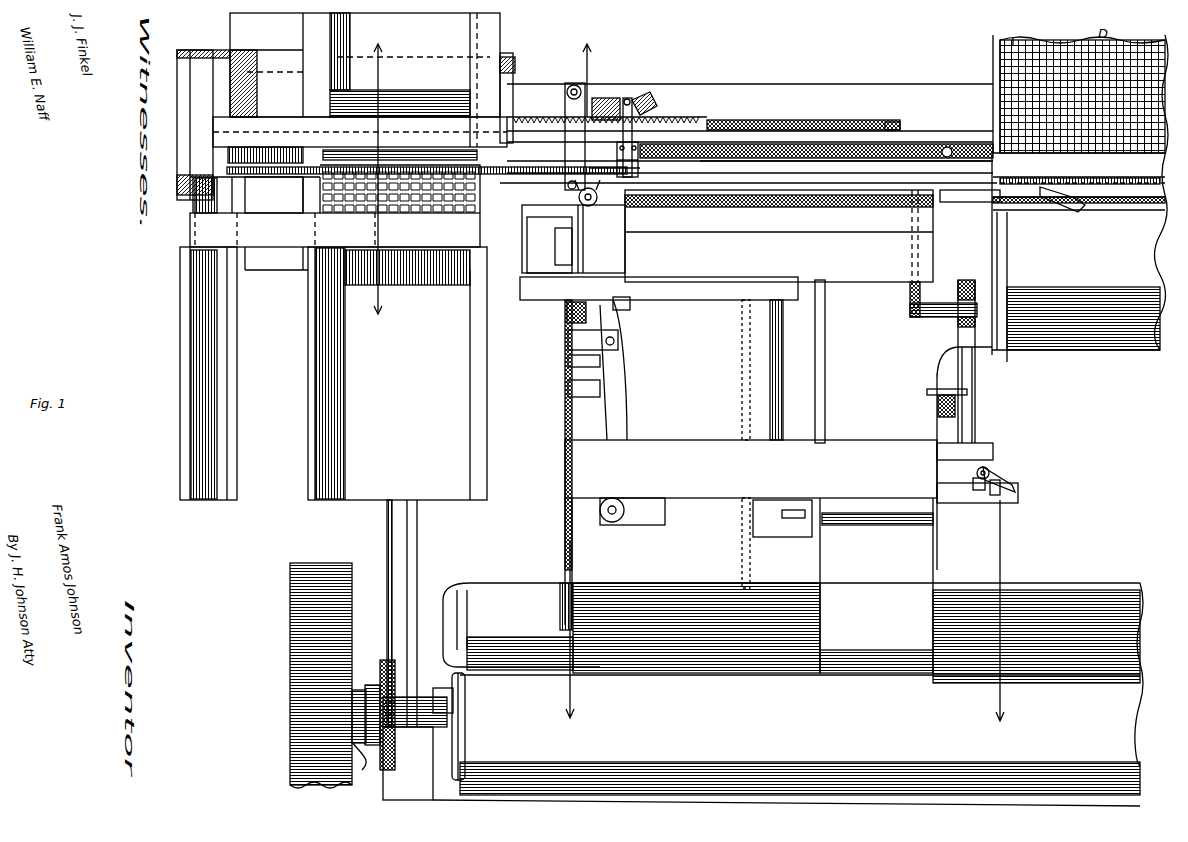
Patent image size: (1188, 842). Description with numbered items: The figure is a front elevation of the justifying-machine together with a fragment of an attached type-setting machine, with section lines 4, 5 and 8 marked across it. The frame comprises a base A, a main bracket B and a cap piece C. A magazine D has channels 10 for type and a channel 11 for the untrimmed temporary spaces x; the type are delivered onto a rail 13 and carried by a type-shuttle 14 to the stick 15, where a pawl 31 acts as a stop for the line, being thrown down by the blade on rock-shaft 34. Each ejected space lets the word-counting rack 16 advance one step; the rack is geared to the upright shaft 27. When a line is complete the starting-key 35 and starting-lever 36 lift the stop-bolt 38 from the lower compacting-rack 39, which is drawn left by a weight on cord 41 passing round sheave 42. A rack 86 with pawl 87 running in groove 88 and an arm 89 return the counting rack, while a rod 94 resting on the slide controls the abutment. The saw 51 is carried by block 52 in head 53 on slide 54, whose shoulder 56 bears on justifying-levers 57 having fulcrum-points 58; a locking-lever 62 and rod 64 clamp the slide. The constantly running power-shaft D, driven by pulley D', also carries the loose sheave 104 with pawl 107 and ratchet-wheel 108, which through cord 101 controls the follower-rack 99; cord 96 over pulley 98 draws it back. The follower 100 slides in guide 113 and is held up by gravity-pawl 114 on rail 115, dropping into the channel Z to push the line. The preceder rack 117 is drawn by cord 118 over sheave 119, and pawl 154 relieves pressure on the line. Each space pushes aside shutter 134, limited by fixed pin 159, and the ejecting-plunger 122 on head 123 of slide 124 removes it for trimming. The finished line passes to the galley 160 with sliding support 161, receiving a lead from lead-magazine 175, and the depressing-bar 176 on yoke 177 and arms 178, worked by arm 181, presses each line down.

The section line 4 4 is at (373, 180).
The section line 5 5 is at (1002, 385).
The section line 8 8 is at (576, 381).
The channels 10 is at (1165, 50).
The channel 11 is at (993, 58).
The rail 13 is at (1136, 205).
The type-shuttle 14 is at (1056, 205).
The stick 15 is at (937, 202).
The word-counting rack 16 is at (397, 373).
The upright shaft 27 is at (780, 419).
The pawl 31 is at (878, 201).
The rock-shaft 34 is at (905, 296).
The starting-key 35 is at (967, 392).
The starting-lever 36 is at (938, 405).
The stop-bolt 38 is at (975, 416).
The lower compacting-rack 39 is at (1018, 497).
The cord 41 is at (588, 572).
The sheave 42 is at (612, 526).
The saw 51 is at (583, 211).
The block 52 is at (573, 246).
The head 53 is at (549, 245).
The slide 54 is at (659, 288).
The shoulder 56 is at (631, 305).
The justifying-levers 57 is at (624, 390).
The fulcrum-points 58 is at (615, 341).
The locking-lever 62 is at (567, 307).
The rod 64 is at (560, 590).
The rack 86 is at (980, 449).
The pawl 87 is at (1005, 478).
The groove 88 is at (992, 495).
The arm 89 is at (978, 491).
The rod 94 is at (821, 343).
The cord 96 is at (810, 161).
The pulley 98 is at (932, 141).
The follower-rack 99 is at (561, 136).
The follower 100 is at (638, 167).
The cord 101 is at (390, 556).
The sheave 104 is at (382, 668).
The spring-pressed pawl 107 is at (352, 706).
The ratchet-wheel 108 is at (372, 684).
The guide 113 is at (611, 159).
The gravity-pawl 114 is at (645, 98).
The rail 115 is at (698, 128).
The sliding rack 117 is at (688, 127).
The cord 118 is at (772, 120).
The sheave 119 is at (880, 121).
The ejecting-plunger 122 is at (617, 166).
The head 123 is at (572, 200).
The slide 124 is at (598, 194).
The shutter 134 is at (565, 162).
The pawl 154 is at (612, 98).
The fixed pin 159 is at (566, 187).
The galley 160 is at (300, 178).
The sliding support 161 is at (335, 230).
The lead-magazine 175 is at (365, 80).
The depressing-bar 176 is at (465, 133).
The yoke 177 is at (507, 100).
The arms 178 is at (517, 62).
The arm 181 is at (177, 112).
The base A is at (793, 689).
The main bracket B is at (914, 458).
The cap piece C is at (815, 91).
The power-shaft D is at (359, 761).
The pulley D' is at (303, 675).
The temporary spaces x is at (993, 104).
The channel Z is at (690, 182).